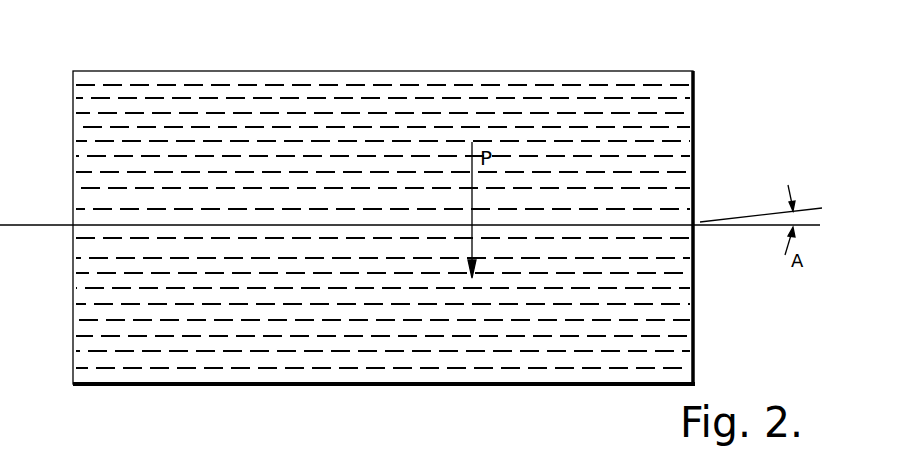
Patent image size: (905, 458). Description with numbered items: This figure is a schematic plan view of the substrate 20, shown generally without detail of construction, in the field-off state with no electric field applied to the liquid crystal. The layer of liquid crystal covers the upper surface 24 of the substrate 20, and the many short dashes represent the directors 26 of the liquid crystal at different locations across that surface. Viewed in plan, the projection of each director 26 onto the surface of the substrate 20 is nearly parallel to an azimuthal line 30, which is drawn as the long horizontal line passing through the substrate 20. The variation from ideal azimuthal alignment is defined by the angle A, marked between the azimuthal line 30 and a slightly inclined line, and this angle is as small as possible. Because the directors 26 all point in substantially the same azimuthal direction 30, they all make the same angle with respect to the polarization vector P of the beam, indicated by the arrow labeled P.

The substrate 20 is at (73, 135).
The upper surface 24 is at (694, 106).
The director 26 is at (540, 100).
The azimuthal line 30 is at (14, 227).